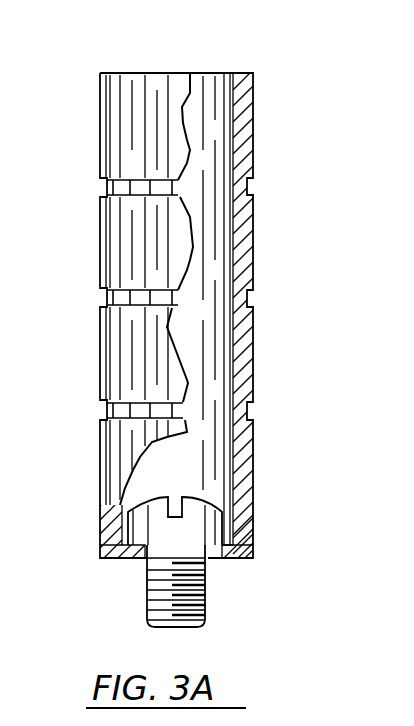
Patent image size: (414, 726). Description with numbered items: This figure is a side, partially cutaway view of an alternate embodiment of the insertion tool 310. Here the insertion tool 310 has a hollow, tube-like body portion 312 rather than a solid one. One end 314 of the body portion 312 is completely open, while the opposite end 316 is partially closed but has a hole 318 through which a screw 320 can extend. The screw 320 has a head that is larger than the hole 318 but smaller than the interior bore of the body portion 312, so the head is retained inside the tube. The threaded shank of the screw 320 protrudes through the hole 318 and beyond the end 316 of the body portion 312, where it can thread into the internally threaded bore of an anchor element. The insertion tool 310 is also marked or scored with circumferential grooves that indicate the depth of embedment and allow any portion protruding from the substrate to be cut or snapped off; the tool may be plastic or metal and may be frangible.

The insertion tool 310 is at (280, 113).
The body portion 312 is at (254, 248).
The open end 314 is at (207, 73).
The opposite end 316 is at (122, 558).
The hole 318 is at (207, 557).
The screw 320 is at (200, 497).